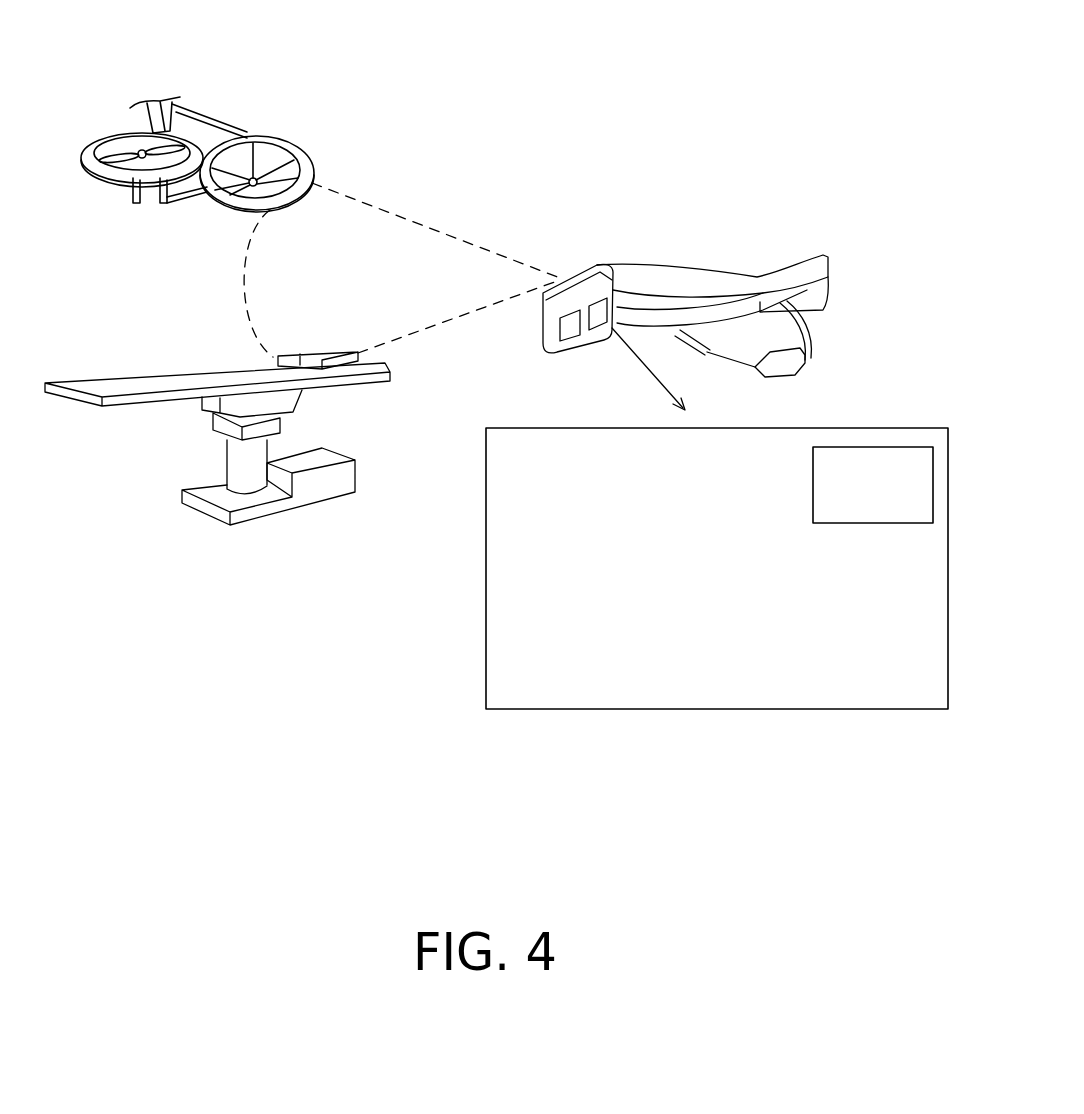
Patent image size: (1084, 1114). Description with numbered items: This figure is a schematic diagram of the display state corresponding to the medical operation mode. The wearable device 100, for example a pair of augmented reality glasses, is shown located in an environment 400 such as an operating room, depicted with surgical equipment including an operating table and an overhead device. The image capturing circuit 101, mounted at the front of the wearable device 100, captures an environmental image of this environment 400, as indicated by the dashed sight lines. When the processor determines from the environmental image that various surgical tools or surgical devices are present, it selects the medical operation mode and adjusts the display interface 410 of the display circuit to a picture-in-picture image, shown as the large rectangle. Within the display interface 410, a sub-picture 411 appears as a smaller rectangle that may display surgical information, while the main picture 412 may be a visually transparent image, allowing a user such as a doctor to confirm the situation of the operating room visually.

The environment 400 is at (448, 82).
The wearable device 100 is at (805, 238).
The image capturing circuit 101 is at (563, 273).
The display interface 410 is at (473, 730).
The sub-picture 411 is at (915, 458).
The main picture 412 is at (773, 448).